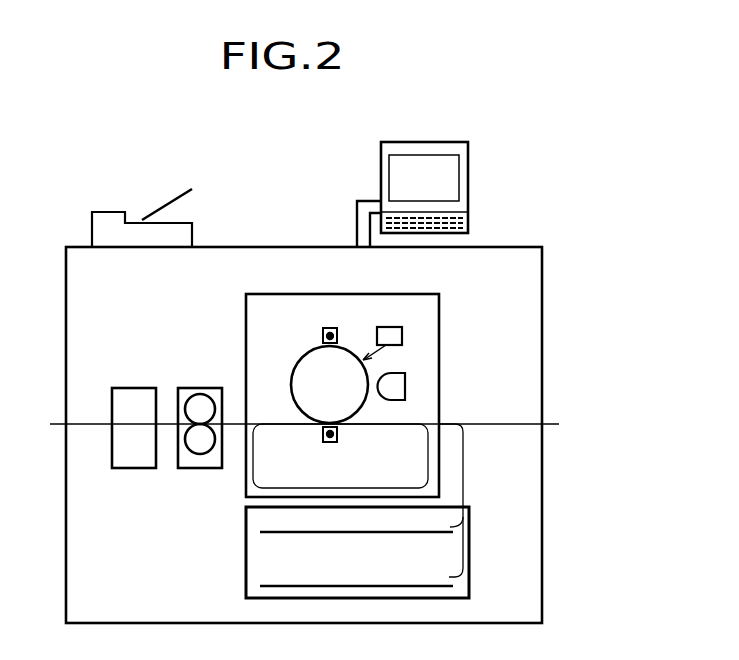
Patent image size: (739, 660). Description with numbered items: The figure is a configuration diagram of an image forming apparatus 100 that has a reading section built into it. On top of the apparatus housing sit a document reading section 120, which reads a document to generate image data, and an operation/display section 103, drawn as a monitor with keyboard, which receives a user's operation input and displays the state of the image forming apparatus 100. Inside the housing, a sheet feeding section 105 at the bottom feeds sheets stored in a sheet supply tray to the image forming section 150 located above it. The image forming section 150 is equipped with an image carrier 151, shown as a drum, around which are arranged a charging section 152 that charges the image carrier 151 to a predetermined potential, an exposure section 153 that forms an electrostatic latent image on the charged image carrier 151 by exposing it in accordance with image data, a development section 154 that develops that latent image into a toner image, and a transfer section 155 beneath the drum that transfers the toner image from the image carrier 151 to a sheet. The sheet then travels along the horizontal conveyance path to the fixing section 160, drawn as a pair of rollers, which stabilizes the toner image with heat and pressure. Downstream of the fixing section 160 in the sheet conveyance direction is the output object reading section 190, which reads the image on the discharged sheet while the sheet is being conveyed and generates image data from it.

The image forming apparatus 100 is at (292, 247).
The operation/display section 103 is at (428, 142).
The document reading section 120 is at (125, 212).
The image forming section 150 is at (343, 294).
The image carrier 151 is at (299, 357).
The charging section 152 is at (330, 328).
The exposure section 153 is at (386, 327).
The development section 154 is at (405, 373).
The transfer section 155 is at (330, 442).
The sheet feeding section 105 is at (348, 559).
The fixing section 160 is at (200, 388).
The output object reading section 190 is at (137, 388).